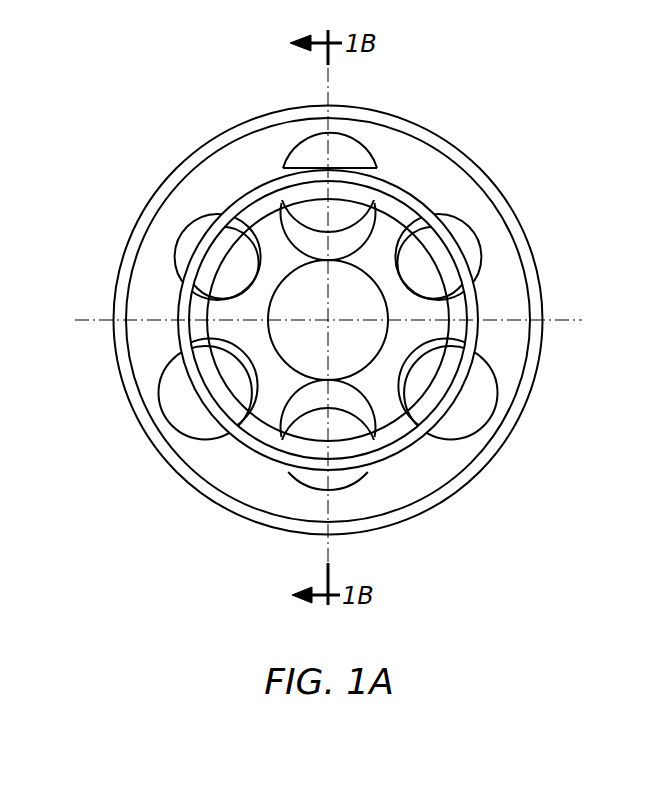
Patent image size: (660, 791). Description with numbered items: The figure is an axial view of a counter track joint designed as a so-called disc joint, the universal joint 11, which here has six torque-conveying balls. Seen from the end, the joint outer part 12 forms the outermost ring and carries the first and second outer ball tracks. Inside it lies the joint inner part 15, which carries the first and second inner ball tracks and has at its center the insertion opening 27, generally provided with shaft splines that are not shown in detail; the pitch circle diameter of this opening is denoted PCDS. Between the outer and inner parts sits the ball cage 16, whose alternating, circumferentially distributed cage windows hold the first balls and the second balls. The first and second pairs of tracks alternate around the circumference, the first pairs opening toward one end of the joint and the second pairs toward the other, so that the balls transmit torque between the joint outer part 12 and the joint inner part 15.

The universal joint 11 is at (335, 312).
The joint outer part 12 is at (418, 170).
The joint inner part 15 is at (434, 319).
The ball cage 16 is at (442, 258).
The insertion opening 27 is at (347, 292).